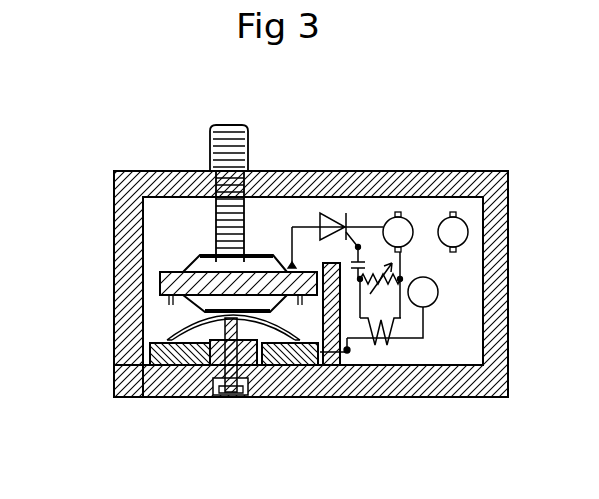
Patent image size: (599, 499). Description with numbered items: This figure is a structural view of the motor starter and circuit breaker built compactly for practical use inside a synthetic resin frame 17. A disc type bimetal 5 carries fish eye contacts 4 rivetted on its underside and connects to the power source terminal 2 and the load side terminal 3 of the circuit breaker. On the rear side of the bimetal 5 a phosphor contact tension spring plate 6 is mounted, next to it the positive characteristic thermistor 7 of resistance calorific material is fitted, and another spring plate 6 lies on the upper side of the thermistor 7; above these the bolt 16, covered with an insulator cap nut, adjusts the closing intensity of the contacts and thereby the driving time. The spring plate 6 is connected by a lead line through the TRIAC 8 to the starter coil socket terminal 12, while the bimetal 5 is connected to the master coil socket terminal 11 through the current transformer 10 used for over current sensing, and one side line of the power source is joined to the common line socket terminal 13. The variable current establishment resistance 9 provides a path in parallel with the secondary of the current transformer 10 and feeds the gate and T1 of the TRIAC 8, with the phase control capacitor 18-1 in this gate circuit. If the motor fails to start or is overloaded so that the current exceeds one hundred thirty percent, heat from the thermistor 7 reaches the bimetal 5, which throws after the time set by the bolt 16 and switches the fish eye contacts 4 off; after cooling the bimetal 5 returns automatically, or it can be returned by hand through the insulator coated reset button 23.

The circuit breaker terminal 2 is at (118, 366).
The circuit breaker terminal 3 is at (293, 366).
The fish eye contacts 4 is at (173, 398).
The bimetal of a DISC type 5 is at (185, 325).
The contact tension spring plate 6 is at (210, 258).
The positive characteristic thermistor 7 is at (160, 283).
The TRIAC 8 is at (329, 222).
The current establishment resistance 9 is at (385, 280).
The current transformer 10 is at (383, 332).
The master coil socket terminal 11 is at (438, 296).
The starter coil socket terminal 12 is at (405, 220).
The common line socket terminal 13 is at (461, 221).
The bolt for driving time control 16 is at (211, 135).
The synthetic resin frame 17 is at (113, 199).
The phase control capacitor 18-1 is at (352, 242).
The reset button 23 is at (235, 395).